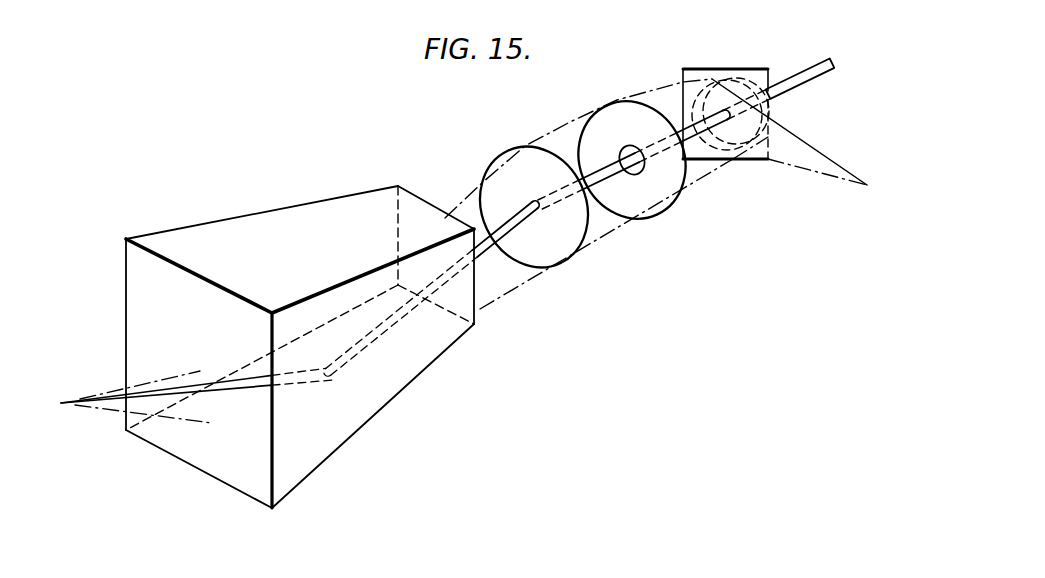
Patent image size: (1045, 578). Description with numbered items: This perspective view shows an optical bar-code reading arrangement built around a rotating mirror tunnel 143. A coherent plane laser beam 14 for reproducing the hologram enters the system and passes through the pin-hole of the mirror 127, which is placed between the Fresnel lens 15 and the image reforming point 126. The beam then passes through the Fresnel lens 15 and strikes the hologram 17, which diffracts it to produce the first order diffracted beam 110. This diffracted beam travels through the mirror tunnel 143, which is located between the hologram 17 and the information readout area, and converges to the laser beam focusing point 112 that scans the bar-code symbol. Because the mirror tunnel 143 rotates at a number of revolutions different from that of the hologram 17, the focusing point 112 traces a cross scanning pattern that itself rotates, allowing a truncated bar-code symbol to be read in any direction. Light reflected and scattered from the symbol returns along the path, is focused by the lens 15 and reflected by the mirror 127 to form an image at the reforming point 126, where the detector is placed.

The rotating mirror tunnel 143 is at (260, 226).
The laser beam focusing point 112 is at (54, 402).
The first order diffracted beam 110 is at (485, 252).
The hologram 17 is at (508, 157).
The Fresnel lens 15 is at (626, 108).
The mirror having a pin-hole 127 is at (692, 73).
The coherent plane laser beam wave 14 is at (817, 66).
The image reforming point 126 is at (868, 186).